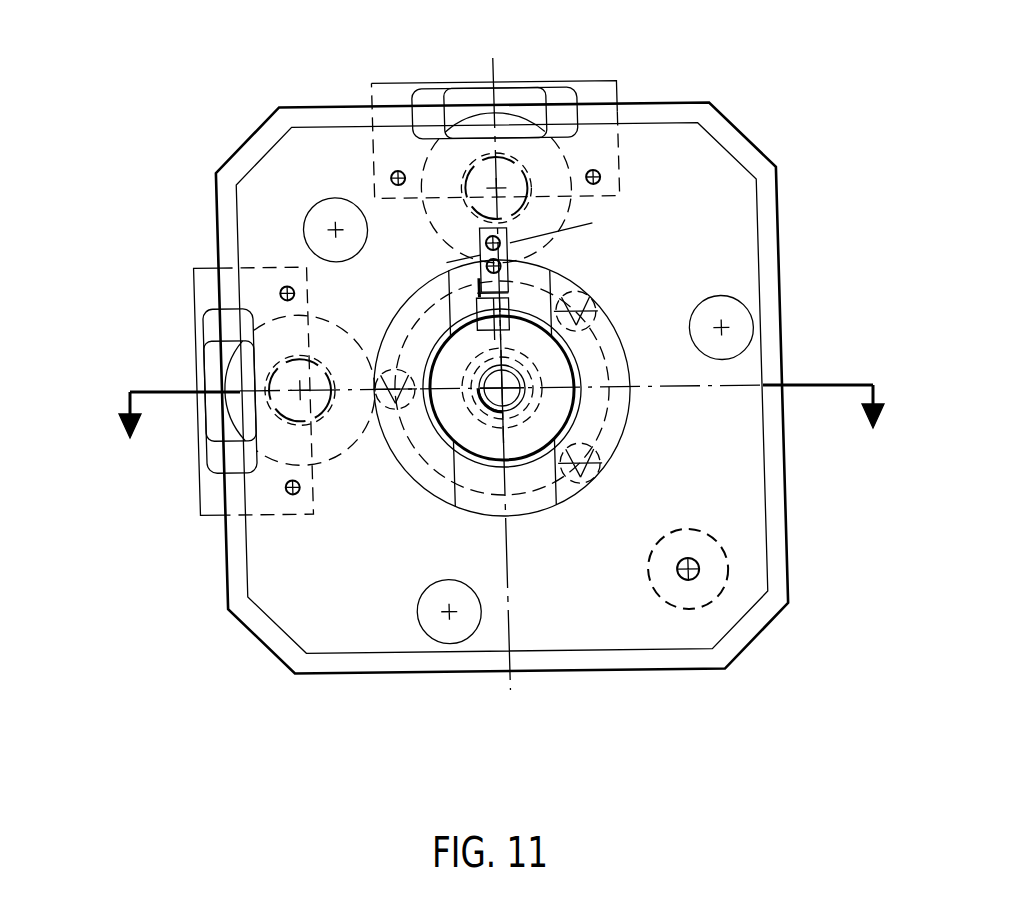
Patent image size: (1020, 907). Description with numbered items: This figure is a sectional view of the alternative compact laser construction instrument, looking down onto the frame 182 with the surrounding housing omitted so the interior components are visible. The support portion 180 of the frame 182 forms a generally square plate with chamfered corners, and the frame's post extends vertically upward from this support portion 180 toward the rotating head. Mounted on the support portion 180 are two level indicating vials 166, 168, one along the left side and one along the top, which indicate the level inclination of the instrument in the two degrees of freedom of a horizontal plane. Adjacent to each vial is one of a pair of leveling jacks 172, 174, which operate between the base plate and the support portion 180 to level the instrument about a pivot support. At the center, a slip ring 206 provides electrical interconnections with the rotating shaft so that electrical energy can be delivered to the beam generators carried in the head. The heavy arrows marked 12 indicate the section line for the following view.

The level indicating vial 166 is at (197, 337).
The level indicating vial 168 is at (458, 86).
The leveling jack 172 is at (270, 325).
The leveling jack 174 is at (430, 158).
The support portion 180 is at (605, 672).
The frame 182 is at (568, 365).
The slip ring 206 is at (592, 223).
The section line 12- 12 is at (504, 430).